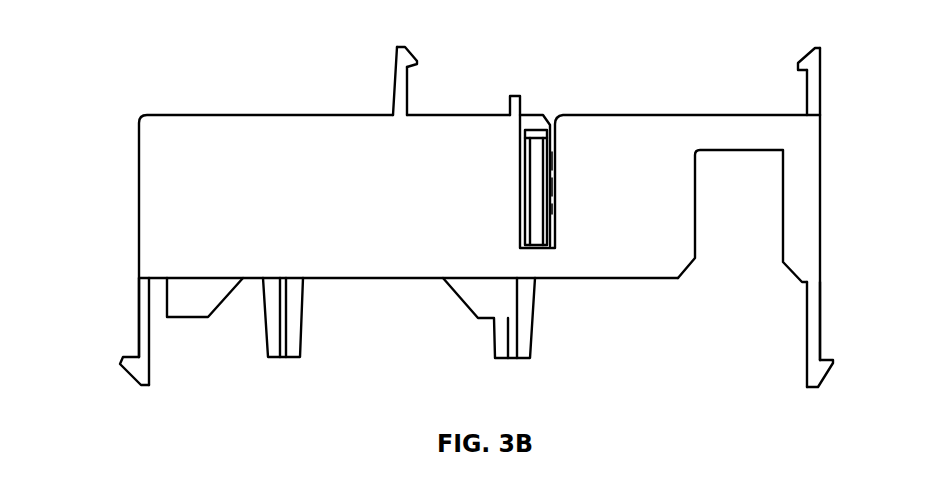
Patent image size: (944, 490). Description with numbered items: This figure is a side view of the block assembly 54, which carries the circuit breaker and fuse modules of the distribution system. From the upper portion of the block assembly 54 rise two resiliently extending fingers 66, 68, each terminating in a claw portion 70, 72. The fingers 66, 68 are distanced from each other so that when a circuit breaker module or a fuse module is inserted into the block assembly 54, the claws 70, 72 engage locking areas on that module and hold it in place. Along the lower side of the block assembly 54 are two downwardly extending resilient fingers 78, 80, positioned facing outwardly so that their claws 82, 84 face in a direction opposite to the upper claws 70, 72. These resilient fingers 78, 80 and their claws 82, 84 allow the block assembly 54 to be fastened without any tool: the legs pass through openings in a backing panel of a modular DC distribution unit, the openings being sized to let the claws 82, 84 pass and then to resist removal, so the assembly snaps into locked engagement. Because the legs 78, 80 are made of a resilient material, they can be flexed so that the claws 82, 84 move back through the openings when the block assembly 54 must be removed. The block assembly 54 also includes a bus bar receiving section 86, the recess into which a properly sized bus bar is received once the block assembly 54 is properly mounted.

The block assembly 54 is at (118, 112).
The resiliently extending finger 66 is at (393, 77).
The claw portion 70 is at (415, 55).
The resiliently extending finger 68 is at (822, 78).
The claw portion 72 is at (798, 57).
The downwardly extending resilient finger 78 is at (153, 335).
The claw 82 is at (125, 372).
The downwardly extending resilient finger 80 is at (822, 295).
The claw 84 is at (832, 362).
The bus bar receiving section 86 is at (733, 249).